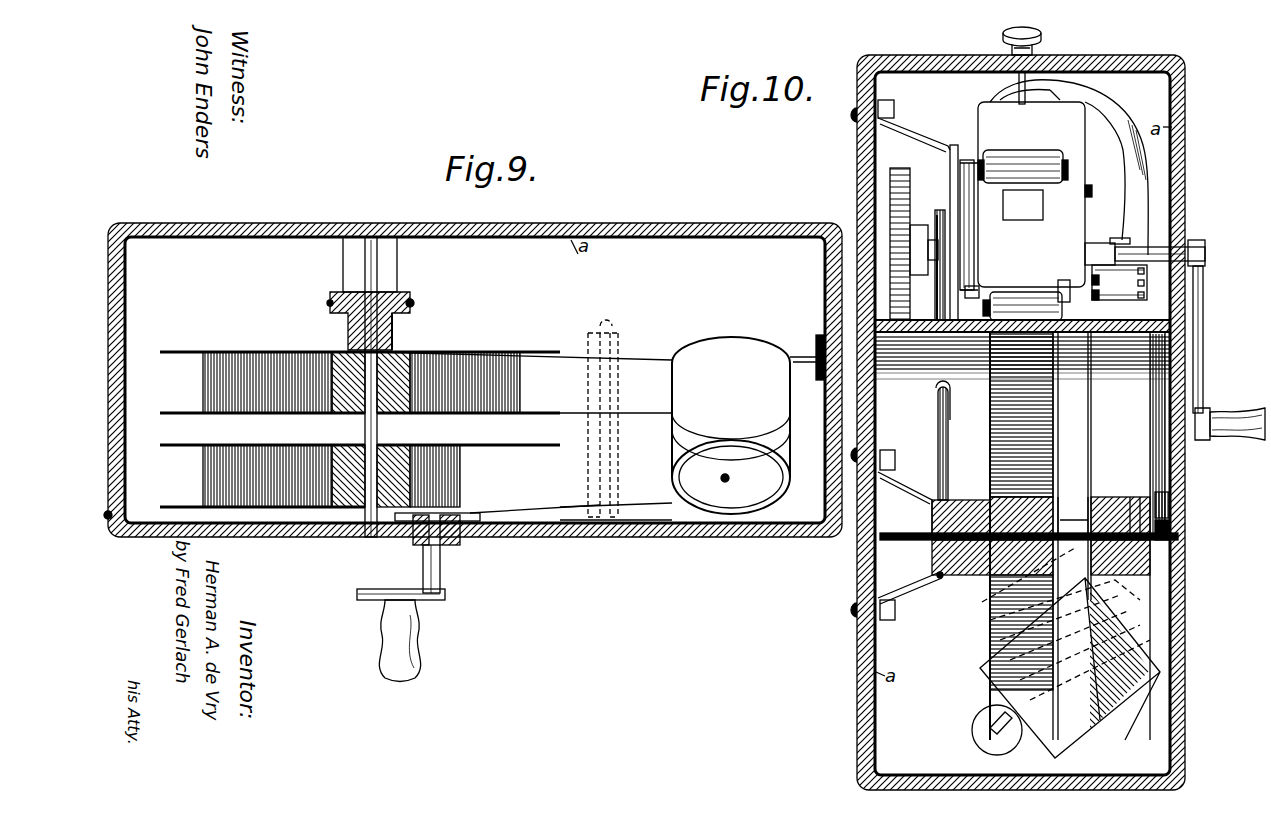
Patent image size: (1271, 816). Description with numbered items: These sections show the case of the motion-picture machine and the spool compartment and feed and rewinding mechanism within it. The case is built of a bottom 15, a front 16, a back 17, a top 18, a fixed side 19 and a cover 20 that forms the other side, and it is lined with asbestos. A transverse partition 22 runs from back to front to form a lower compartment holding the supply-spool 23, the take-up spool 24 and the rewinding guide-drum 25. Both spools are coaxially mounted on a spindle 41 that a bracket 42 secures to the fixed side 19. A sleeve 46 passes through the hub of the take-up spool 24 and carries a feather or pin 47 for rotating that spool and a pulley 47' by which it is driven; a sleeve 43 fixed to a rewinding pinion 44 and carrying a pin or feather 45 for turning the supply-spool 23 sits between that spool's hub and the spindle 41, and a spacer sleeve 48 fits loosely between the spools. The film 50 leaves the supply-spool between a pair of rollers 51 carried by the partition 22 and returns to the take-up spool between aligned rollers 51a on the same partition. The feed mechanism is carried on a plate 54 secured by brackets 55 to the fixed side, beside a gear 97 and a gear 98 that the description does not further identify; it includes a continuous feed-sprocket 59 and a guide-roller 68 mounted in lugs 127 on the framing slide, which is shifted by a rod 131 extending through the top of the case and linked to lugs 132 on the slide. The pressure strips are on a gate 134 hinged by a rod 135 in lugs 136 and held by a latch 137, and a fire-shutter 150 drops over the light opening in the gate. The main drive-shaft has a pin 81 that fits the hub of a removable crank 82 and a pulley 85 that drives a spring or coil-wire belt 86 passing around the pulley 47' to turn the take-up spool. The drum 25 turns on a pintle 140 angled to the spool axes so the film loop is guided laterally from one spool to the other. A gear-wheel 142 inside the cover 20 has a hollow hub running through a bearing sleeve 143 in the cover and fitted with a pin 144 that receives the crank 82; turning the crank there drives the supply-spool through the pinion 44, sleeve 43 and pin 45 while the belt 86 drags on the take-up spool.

In FIG. 10, the bottom 15 is at (942, 775).
In FIG. 9, the front 16 is at (824, 290).
In FIG. 9, the back 17 is at (118, 302).
In FIG. 10, the top 18 is at (945, 50).
In FIG. 9, the fixed side 19 is at (514, 225).
In FIG. 10, the fixed side 19 is at (856, 186).
In FIG. 9, the cover 20 is at (278, 537).
In FIG. 10, the cover 20 is at (1188, 180).
In FIG. 10, the transverse partition 22 is at (925, 334).
In FIG. 9, the supply-spool 23 is at (240, 447).
In FIG. 10, the supply-spool 23 is at (1150, 406).
In FIG. 9, the take-up spool 24 is at (205, 352).
In FIG. 9, the rewinding guide-drum 25 is at (731, 425).
In FIG. 9, the spindle 41 is at (364, 540).
In FIG. 10, the spindle 41 is at (907, 541).
In FIG. 9, the bracket 42 is at (397, 292).
In FIG. 10, the bracket 42 is at (905, 485).
In FIG. 10, the sleeve 43 is at (1100, 497).
In FIG. 10, the rewinding pinion 44 is at (1172, 522).
In FIG. 10, the pin or feather 45 is at (1134, 497).
In FIG. 9, the sleeve 46 is at (348, 372).
In FIG. 10, the sleeve 46 is at (985, 570).
In FIG. 10, the feather or pin 47 is at (1005, 536).
In FIG. 9, the pulley 47' is at (414, 331).
In FIG. 10, the pulley 47' is at (910, 596).
In FIG. 10, the spacer sleeve 48 is at (1064, 520).
In FIG. 9, the film 50 is at (524, 436).
In FIG. 10, the film 50 is at (1070, 419).
In FIG. 9, the rollers 51 is at (587, 485).
In FIG. 9, the rollers 51a is at (589, 337).
In FIG. 10, the plate 54 is at (958, 186).
In FIG. 10, the brackets 55 is at (910, 137).
In FIG. 10, the continuous feed-sprocket 59 is at (1140, 292).
In FIG. 10, the guide-roller 68 is at (1022, 305).
In FIG. 10, the pin 81 is at (1122, 250).
In FIG. 9, the crank 82 is at (443, 565).
In FIG. 10, the crank 82 is at (1140, 245).
In FIG. 10, the pulley 85 is at (940, 288).
In FIG. 9, the spring or coil-wire belt 86 is at (414, 303).
In FIG. 10, the spring or coil-wire belt 86 is at (951, 438).
In FIG. 10, the pinion 97 is at (919, 225).
In FIG. 10, the gear 98 is at (898, 170).
In FIG. 10, the lugs 127 is at (1061, 297).
In FIG. 10, the rod 131 is at (1018, 83).
In FIG. 10, the lugs 132 is at (1041, 38).
In FIG. 10, the gate 134 is at (1031, 194).
In FIG. 10, the rod 135 is at (972, 248).
In FIG. 10, the lugs 136 is at (972, 288).
In FIG. 10, the latch 137 is at (1088, 192).
In FIG. 9, the pintle 140 is at (800, 354).
In FIG. 10, the pintle 140 is at (1010, 740).
In FIG. 9, the gear-wheel 142 is at (466, 511).
In FIG. 10, the gear-wheel 142 is at (1172, 497).
In FIG. 9, the bearing sleeve 143 is at (463, 542).
In FIG. 9, the pin 144 is at (418, 547).
In FIG. 10, the fire-shutter 150 is at (1012, 150).